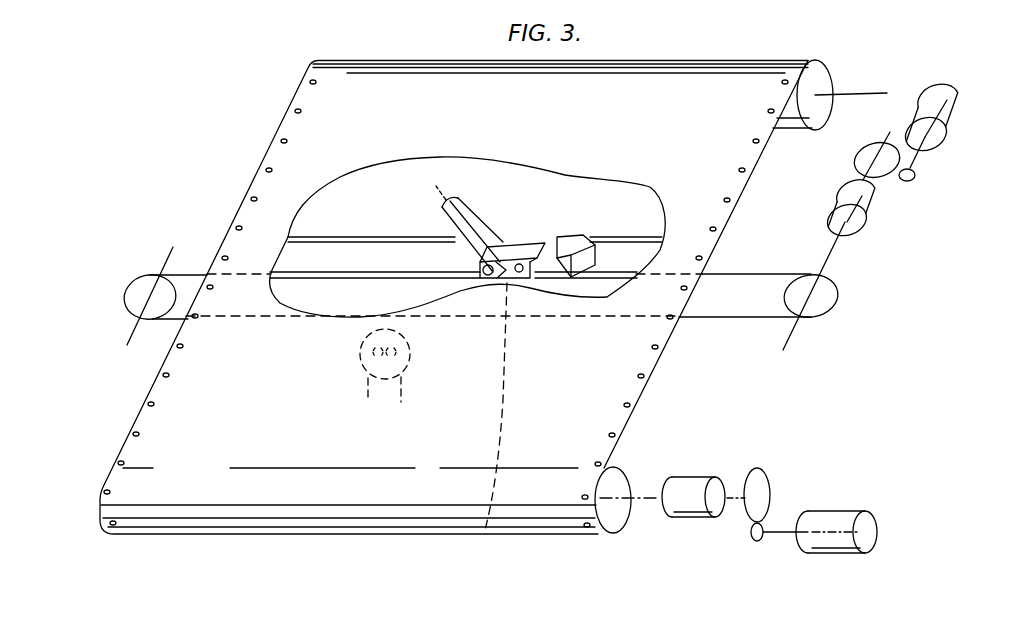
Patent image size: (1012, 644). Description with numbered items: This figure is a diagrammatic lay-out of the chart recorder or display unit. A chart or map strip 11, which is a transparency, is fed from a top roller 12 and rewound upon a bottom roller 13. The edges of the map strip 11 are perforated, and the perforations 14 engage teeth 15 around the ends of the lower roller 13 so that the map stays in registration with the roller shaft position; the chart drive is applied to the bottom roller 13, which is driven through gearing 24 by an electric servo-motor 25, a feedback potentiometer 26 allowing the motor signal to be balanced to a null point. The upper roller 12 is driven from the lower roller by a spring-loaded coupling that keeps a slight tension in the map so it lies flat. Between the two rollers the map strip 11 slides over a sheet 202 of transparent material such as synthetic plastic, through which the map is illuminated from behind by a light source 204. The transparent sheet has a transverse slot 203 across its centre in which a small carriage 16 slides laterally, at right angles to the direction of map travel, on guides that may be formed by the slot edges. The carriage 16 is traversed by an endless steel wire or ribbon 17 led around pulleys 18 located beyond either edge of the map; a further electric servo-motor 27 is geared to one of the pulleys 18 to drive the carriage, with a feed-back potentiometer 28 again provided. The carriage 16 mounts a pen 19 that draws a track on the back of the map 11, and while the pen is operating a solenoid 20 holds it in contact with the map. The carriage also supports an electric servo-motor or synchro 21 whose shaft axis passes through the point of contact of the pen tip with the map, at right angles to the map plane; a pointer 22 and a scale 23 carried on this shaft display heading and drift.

The chart or map strip 11 is at (407, 75).
The top roller 12 is at (826, 63).
The bottom roller 13 is at (617, 466).
The perforations 14 is at (642, 372).
The teeth 15 is at (583, 500).
The carriage 16 is at (563, 257).
The endless steel wire or ribbon 17 is at (761, 268).
The pulleys 18 is at (132, 292).
The pen 19 is at (487, 263).
The solenoid 20 is at (530, 262).
The electric servo-motor or synchro 21 is at (490, 277).
The pointer 22 is at (466, 211).
The scale 23 is at (500, 277).
The gearing 24 is at (765, 485).
The electric servo-motor 25 is at (831, 510).
The feedback potentiometer 26 is at (692, 481).
The electric servo-motor 27 is at (946, 122).
The feed-back potentiometer 28 is at (866, 212).
The sheet of transparent material 202 is at (385, 201).
The transverse slot 203 is at (360, 237).
The light source 204 is at (360, 355).